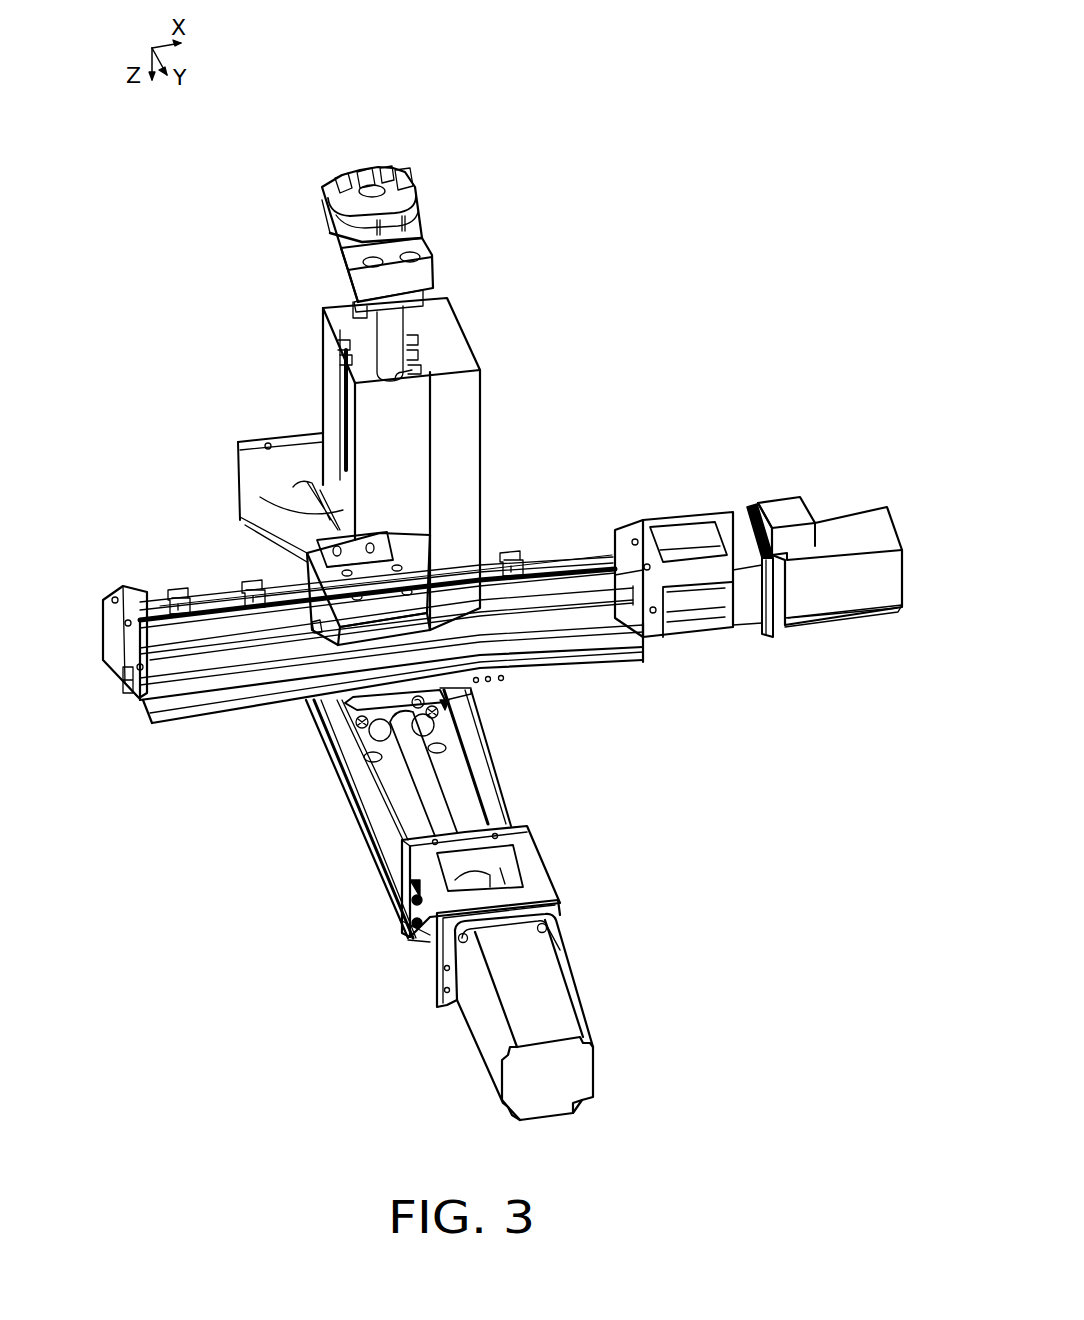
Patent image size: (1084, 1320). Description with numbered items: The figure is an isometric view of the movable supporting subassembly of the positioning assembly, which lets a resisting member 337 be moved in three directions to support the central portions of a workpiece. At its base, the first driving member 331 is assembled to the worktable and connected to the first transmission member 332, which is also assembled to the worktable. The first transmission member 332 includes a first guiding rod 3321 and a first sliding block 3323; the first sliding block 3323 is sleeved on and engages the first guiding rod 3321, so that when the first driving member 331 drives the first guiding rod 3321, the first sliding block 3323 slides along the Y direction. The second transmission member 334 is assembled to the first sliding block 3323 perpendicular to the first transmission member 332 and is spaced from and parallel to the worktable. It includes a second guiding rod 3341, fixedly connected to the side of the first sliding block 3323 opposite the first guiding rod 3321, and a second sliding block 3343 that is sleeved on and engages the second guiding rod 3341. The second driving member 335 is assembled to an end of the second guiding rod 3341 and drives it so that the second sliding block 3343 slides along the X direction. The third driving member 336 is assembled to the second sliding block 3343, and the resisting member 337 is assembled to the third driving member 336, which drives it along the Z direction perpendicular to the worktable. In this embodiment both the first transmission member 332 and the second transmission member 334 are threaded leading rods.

The first driving member 331 is at (568, 1073).
The first transmission member 332 is at (503, 847).
The first guiding rod 3321 is at (437, 815).
The first sliding block 3323 is at (440, 718).
The second transmission member 334 is at (373, 654).
The second guiding rod 3341 is at (220, 633).
The second sliding block 3343 is at (323, 635).
The second driving member 335 is at (852, 518).
The third driving member 336 is at (400, 415).
The resisting member 337 is at (388, 205).